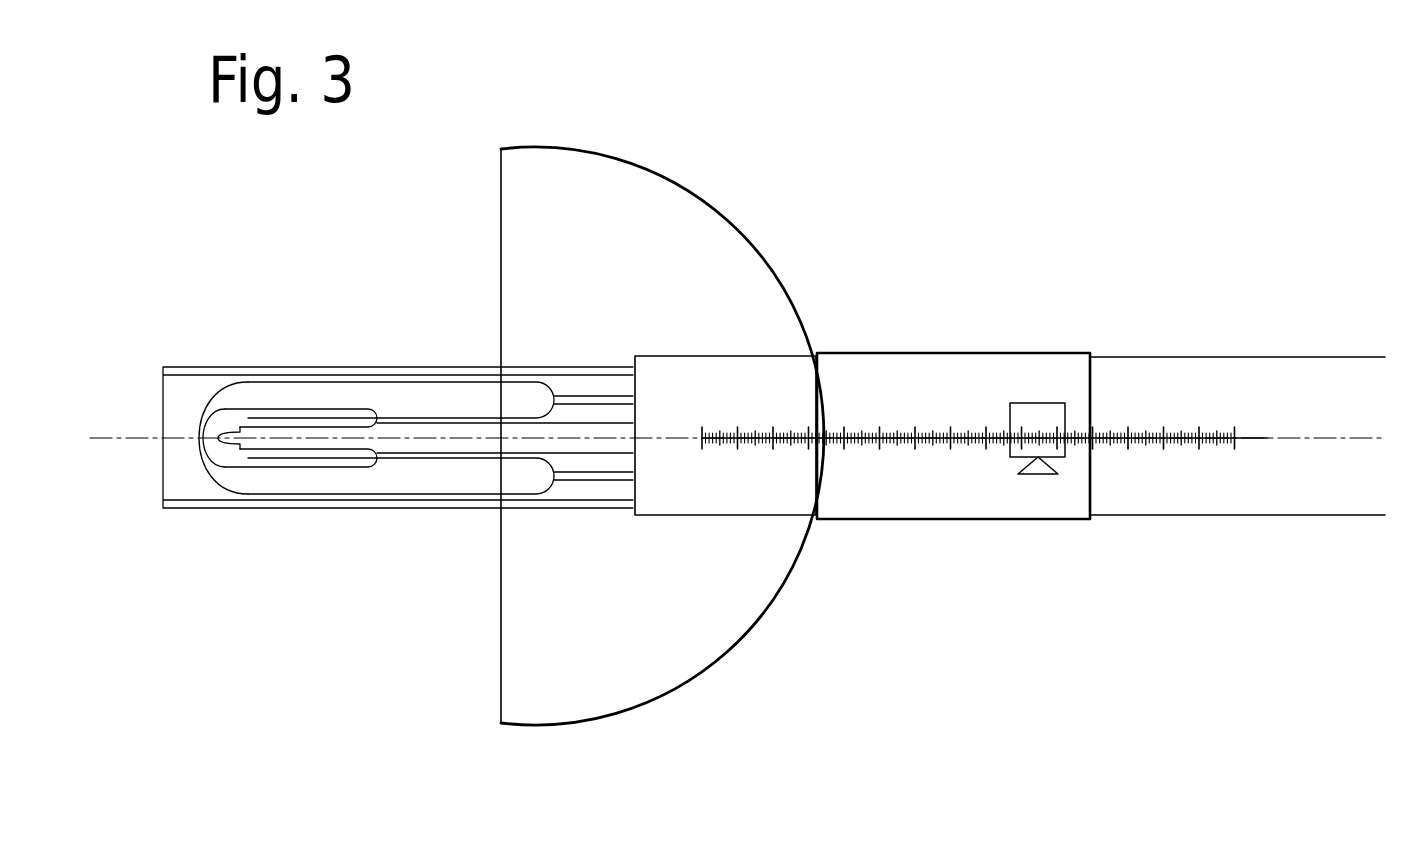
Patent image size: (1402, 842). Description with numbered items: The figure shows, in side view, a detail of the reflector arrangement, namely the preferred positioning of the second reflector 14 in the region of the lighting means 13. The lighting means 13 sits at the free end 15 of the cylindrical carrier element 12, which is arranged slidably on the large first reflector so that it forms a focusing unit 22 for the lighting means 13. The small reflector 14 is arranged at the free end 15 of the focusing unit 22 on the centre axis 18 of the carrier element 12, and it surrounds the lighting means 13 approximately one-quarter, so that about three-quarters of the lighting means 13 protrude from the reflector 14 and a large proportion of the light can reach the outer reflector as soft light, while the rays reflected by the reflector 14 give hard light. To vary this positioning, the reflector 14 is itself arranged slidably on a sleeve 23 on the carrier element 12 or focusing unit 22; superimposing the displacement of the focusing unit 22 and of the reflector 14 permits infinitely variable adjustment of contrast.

The carrier element 12 is at (1180, 530).
The lighting means 13 is at (397, 493).
The second reflector 14 is at (713, 208).
The free end 15 is at (635, 356).
The centre axis 18 is at (1267, 436).
The focusing unit 22 is at (1118, 380).
The sleeve 23 is at (903, 352).